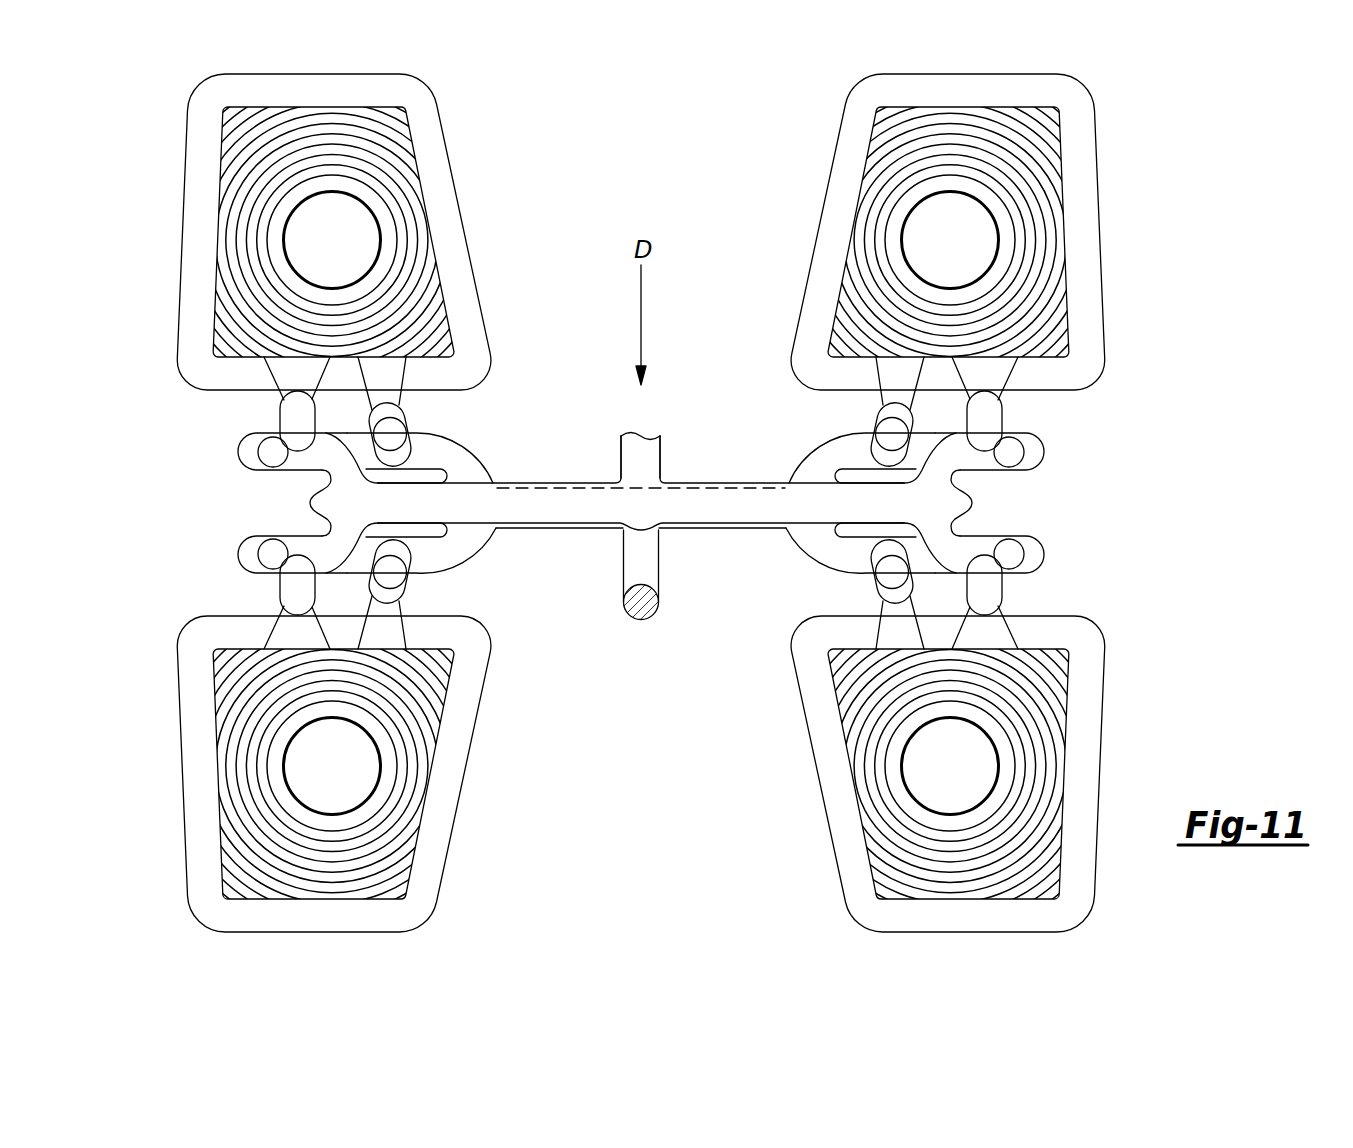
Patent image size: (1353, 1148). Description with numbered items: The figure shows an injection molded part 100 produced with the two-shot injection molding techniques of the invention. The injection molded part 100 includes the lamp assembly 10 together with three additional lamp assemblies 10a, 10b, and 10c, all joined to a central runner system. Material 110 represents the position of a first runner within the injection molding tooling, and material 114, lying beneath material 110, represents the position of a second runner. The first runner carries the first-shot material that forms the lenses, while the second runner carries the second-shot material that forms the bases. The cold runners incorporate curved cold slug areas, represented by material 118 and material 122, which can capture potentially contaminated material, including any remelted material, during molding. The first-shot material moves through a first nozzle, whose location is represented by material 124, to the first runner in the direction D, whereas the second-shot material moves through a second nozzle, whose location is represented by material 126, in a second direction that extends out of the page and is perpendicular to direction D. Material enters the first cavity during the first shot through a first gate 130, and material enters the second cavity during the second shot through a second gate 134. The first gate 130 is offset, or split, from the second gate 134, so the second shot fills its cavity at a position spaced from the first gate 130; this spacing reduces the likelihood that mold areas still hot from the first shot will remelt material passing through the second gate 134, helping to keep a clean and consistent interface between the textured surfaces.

The injection molded part 100 is at (685, 498).
The lamp assembly 10 is at (193, 185).
The additional lamp assembly 10a is at (198, 700).
The additional lamp assembly 10b is at (1085, 698).
The additional lamp assembly 10c is at (1088, 293).
The material 110 is at (543, 510).
The material 114 is at (700, 535).
The material 118 is at (240, 457).
The material 122 is at (472, 469).
The material 124 is at (660, 455).
The material 126 is at (640, 621).
The first gate 130 is at (273, 370).
The second gate 134 is at (388, 397).